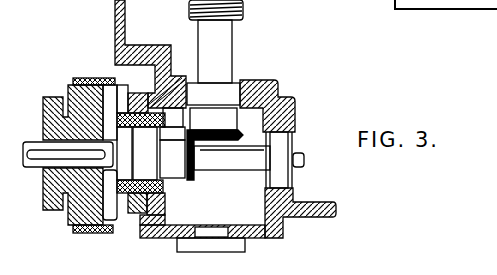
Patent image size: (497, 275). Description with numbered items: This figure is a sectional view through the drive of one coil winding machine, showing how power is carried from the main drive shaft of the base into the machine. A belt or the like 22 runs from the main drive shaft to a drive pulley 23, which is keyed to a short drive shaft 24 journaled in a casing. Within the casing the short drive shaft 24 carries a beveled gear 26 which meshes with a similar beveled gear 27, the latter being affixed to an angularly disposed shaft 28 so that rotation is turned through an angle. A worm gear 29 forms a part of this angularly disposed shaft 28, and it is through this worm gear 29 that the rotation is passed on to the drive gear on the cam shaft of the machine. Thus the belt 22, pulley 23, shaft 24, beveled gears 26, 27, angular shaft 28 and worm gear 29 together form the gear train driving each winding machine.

The belt 22 is at (90, 234).
The drive pulley 23 is at (66, 224).
The drive shaft 24 is at (33, 141).
The beveled gear 26 is at (173, 172).
The beveled gear 27 is at (240, 117).
The angularly disposed shaft 28 is at (225, 59).
The worm gear 29 is at (240, 15).